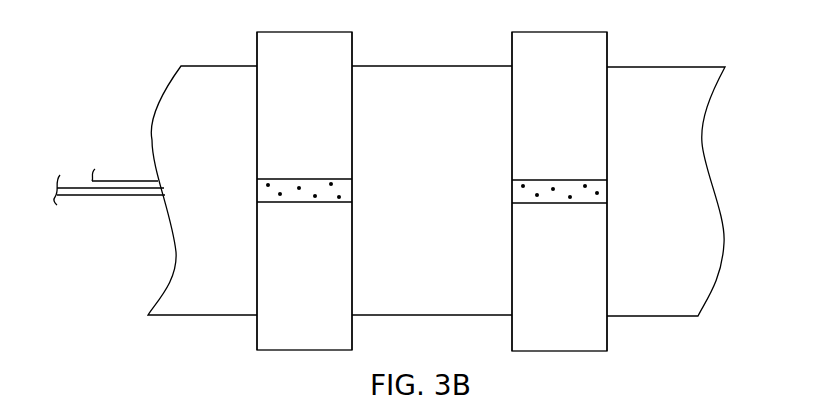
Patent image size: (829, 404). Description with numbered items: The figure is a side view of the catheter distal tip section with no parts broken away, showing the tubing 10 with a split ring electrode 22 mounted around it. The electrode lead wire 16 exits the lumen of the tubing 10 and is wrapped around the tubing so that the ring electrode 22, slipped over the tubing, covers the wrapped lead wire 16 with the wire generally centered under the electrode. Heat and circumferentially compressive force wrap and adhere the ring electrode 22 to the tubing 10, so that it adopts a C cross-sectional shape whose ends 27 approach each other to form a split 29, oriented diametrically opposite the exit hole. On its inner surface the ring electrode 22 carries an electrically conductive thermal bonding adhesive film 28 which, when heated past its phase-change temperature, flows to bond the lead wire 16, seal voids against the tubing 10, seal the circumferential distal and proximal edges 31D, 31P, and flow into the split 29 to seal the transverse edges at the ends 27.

The tubing 10 is at (433, 66).
The electrode lead wire 16 is at (93, 197).
The split ring electrode 22 is at (258, 46).
The ends 27 is at (333, 178).
The thermal bonding adhesive film 28 is at (338, 191).
The split 29 is at (432, 195).
The proximal edge 31P is at (258, 108).
The distal edge 31D is at (352, 93).